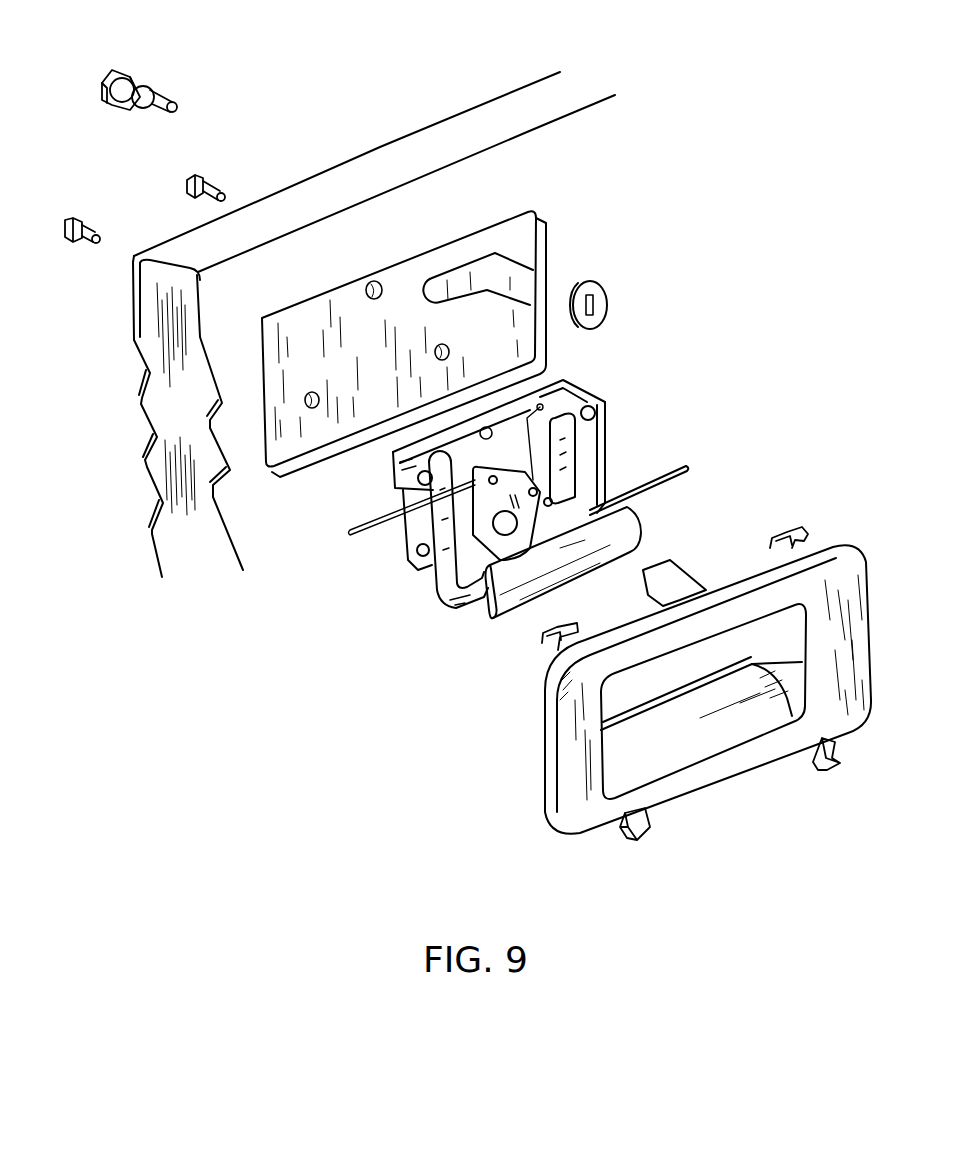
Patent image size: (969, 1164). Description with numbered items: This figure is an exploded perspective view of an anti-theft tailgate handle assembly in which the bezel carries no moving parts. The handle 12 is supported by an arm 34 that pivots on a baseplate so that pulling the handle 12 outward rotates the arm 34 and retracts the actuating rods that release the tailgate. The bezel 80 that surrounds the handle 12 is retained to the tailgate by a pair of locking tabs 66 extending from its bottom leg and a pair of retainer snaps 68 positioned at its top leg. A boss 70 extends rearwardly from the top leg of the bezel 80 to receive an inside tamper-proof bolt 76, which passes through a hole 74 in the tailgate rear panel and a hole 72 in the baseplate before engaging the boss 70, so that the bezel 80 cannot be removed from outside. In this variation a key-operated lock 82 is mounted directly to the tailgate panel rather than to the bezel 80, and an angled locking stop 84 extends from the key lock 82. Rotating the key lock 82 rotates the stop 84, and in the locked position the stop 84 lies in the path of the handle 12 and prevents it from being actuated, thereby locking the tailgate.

The handle 12 is at (633, 507).
The arm 34 is at (593, 477).
The locking tabs 66 is at (828, 768).
The retainer snaps 68 is at (793, 545).
The boss 70 is at (688, 580).
The hole 72 is at (487, 427).
The hole 74 is at (376, 283).
The inside tamper-proof bolt 76 is at (118, 70).
The bezel 80 is at (588, 817).
The key-operated lock 82 is at (607, 296).
The angled locking stop 84 is at (460, 280).